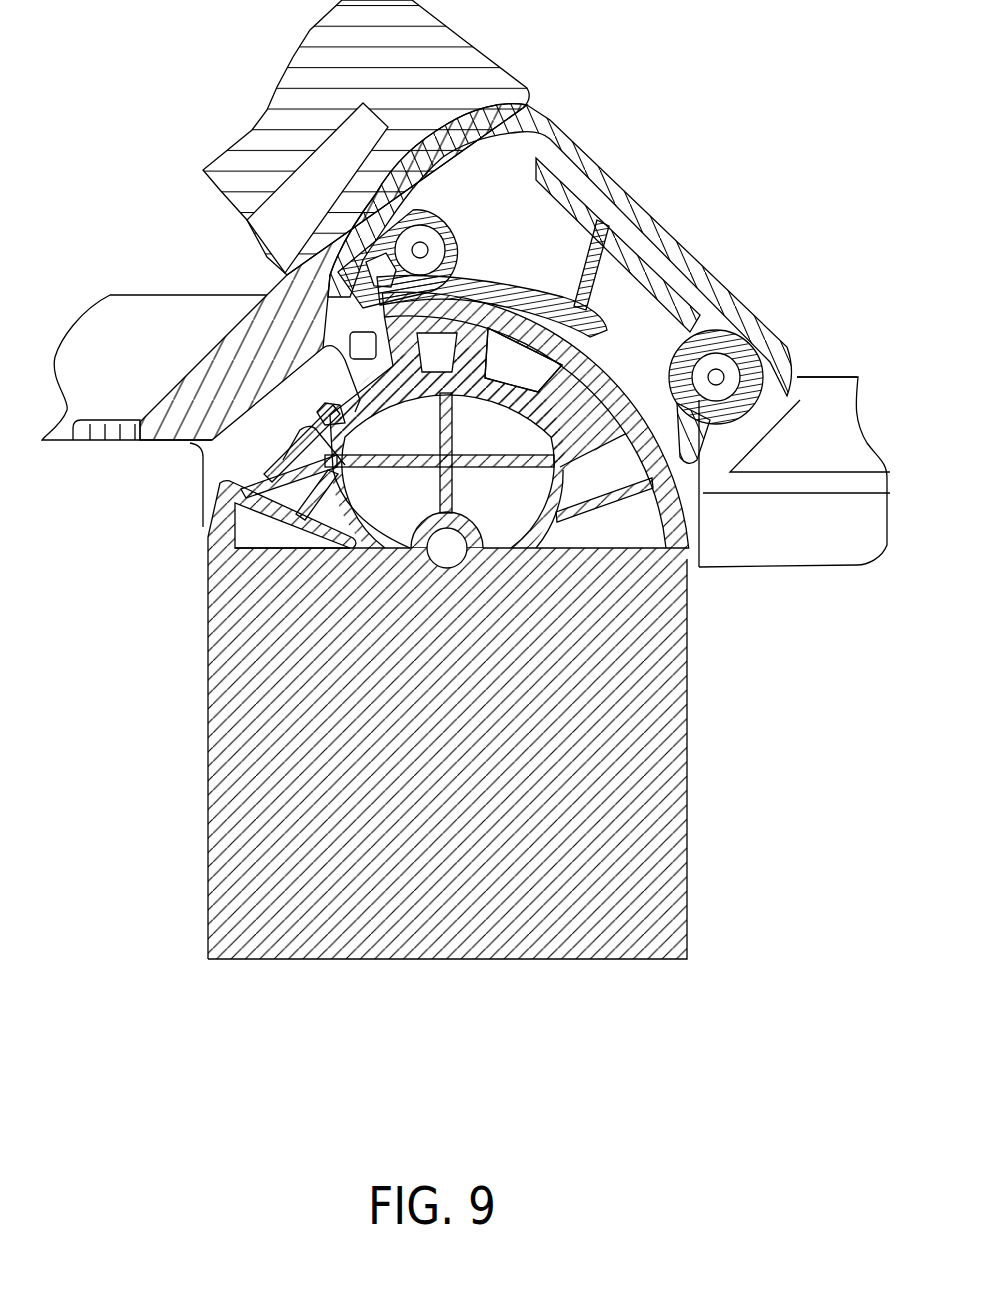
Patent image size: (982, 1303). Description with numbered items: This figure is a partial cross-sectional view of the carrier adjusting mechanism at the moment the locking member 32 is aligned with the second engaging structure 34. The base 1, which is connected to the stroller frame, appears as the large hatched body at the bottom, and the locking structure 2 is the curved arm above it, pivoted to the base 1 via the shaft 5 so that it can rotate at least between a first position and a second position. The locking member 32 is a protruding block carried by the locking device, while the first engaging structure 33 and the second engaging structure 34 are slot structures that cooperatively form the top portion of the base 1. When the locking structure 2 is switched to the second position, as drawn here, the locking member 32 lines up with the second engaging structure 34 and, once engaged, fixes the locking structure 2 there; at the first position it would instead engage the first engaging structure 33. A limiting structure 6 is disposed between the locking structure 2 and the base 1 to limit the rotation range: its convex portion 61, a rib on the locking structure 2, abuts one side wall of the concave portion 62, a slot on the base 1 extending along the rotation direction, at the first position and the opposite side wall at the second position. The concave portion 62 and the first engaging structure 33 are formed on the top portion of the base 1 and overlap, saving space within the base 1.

The base 1 is at (680, 952).
The locking structure 2 is at (590, 163).
The shaft 5 is at (447, 553).
The limiting structure 6 is at (56, 192).
The convex portion 61 is at (355, 368).
The concave portion 62 is at (285, 412).
The locking member 32 is at (545, 332).
The first engaging structure 33 is at (392, 373).
The second engaging structure 34 is at (527, 363).